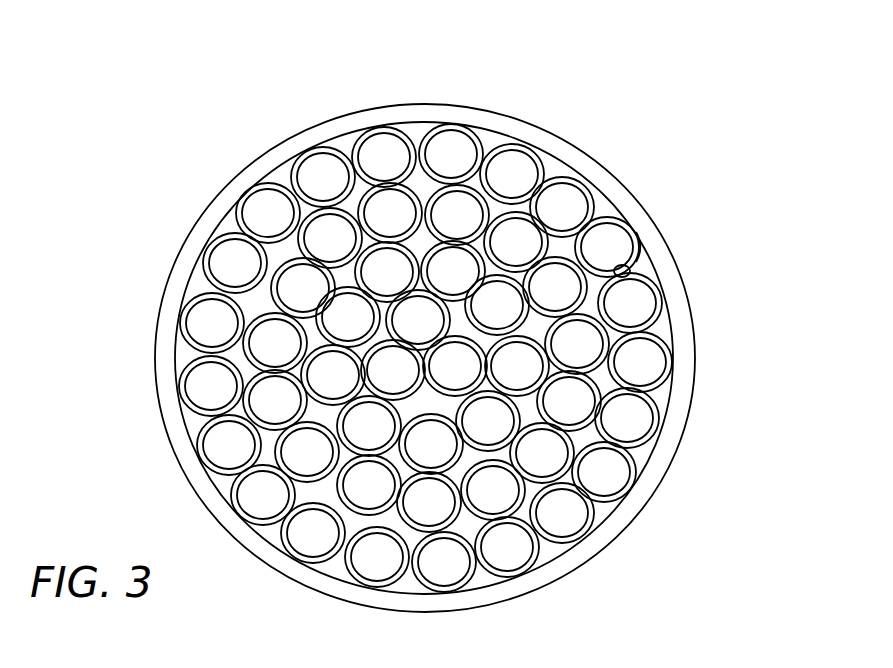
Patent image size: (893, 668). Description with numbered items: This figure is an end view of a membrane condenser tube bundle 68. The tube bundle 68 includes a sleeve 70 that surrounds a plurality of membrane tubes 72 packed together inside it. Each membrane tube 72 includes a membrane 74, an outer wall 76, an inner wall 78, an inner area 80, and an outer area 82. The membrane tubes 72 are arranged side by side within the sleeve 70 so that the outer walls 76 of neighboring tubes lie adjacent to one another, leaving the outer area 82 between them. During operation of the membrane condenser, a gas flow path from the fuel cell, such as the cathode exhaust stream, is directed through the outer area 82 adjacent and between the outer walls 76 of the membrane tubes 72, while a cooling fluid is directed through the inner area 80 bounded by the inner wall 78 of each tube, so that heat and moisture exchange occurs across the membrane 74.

The tube bundle 68 is at (462, 310).
The sleeve 70 is at (427, 112).
The membrane tube 72 is at (603, 217).
The membrane 74 is at (618, 228).
The outer wall 76 is at (644, 253).
The inner wall 78 is at (629, 271).
The inner area 80 is at (463, 350).
The outer area 82 is at (668, 393).